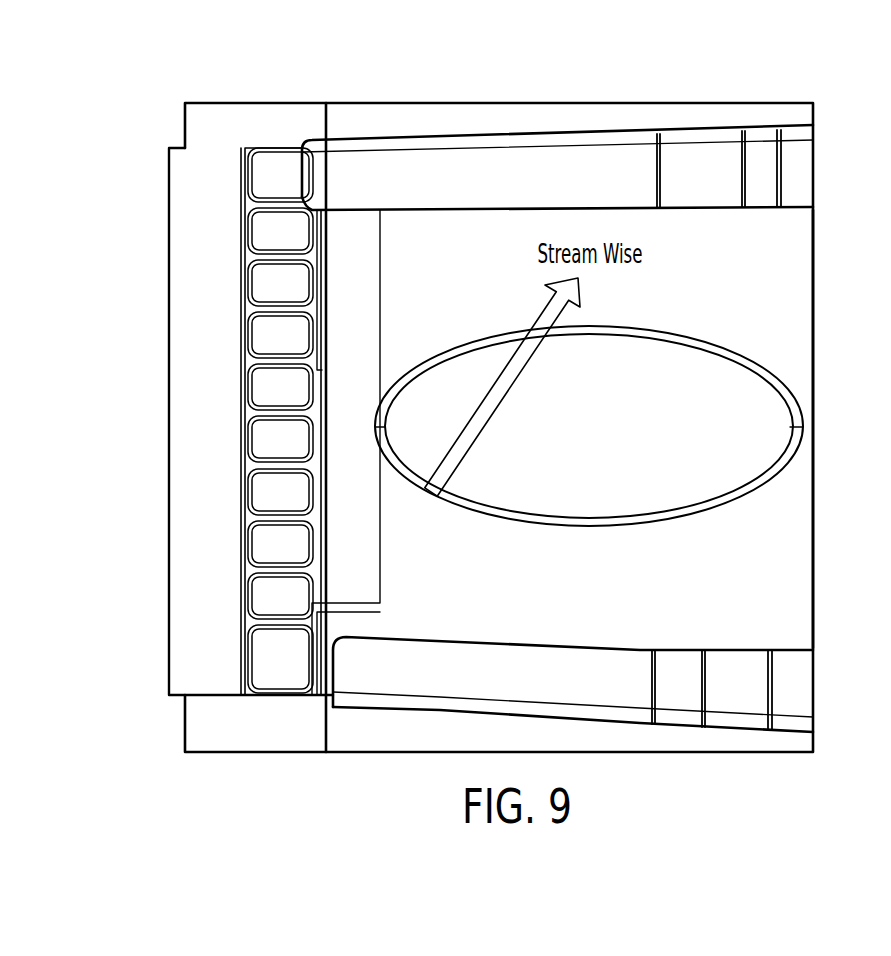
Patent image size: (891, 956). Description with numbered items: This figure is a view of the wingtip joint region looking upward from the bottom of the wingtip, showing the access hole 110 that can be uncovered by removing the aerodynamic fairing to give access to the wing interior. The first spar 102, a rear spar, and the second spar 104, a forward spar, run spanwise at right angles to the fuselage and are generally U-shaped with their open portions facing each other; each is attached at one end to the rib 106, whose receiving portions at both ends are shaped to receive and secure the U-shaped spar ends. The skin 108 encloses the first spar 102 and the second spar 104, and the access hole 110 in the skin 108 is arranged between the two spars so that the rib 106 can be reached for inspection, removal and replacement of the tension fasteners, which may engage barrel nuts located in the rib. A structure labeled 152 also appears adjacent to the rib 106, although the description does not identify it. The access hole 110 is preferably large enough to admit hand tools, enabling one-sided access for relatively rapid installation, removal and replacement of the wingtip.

The first spar 102 is at (598, 673).
The second spar 104 is at (600, 168).
The rib 106 is at (248, 284).
The skin 108 is at (713, 573).
The access hole 110 is at (573, 439).
The leading edge wall 152 is at (182, 417).